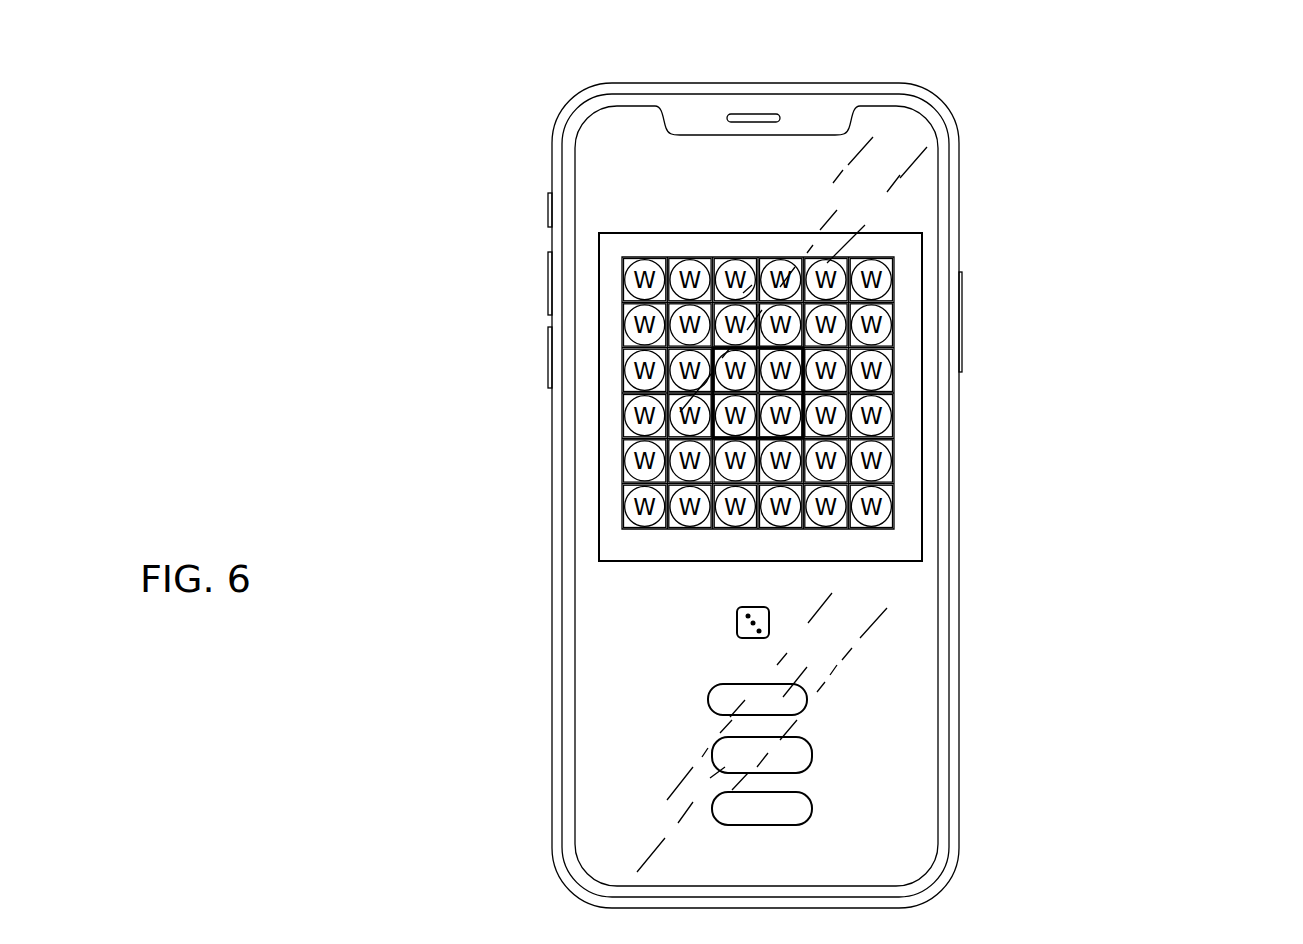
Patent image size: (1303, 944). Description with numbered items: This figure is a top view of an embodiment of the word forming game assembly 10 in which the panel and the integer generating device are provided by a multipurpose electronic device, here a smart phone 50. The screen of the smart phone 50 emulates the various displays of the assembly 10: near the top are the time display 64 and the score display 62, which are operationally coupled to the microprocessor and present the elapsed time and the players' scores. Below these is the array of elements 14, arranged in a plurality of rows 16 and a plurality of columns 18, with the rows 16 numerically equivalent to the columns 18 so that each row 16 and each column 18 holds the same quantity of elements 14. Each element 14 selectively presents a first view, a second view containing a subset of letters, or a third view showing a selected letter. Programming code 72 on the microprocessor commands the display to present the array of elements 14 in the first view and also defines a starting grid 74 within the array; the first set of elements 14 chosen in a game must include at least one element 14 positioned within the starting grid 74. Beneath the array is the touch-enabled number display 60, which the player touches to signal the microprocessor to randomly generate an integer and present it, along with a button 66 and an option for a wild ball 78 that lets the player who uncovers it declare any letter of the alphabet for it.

The word forming game assembly 10 is at (859, 461).
The smart phone 50 is at (962, 233).
The time display 64 is at (838, 158).
The score display 62 is at (900, 196).
The rows 16 is at (892, 422).
The elements 14 is at (836, 417).
The columns 18 is at (645, 262).
The starting grid 74 is at (712, 413).
The programming code 72 is at (850, 606).
The number display 60 is at (777, 624).
The wild ball 78 is at (812, 757).
The button 66 is at (812, 808).